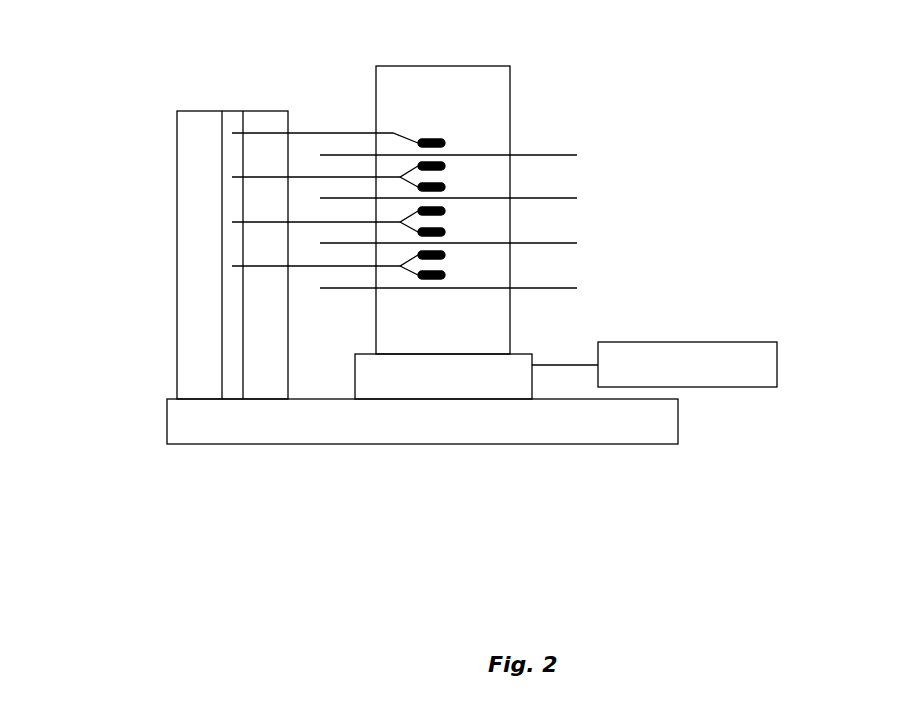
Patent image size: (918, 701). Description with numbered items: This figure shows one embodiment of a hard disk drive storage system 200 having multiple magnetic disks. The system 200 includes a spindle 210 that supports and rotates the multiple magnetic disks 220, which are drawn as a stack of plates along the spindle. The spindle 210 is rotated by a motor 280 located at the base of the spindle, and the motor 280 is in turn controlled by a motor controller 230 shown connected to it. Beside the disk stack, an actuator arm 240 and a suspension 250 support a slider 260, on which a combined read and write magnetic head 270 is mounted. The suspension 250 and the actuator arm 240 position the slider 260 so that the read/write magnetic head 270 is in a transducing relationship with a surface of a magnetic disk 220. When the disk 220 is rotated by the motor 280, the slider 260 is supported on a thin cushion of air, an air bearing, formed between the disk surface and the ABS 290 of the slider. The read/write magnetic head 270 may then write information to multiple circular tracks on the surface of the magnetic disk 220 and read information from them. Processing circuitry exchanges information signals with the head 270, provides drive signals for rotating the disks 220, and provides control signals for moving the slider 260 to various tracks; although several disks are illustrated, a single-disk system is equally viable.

The hard disk drive storage system 200 is at (66, 516).
The spindle 210 is at (510, 66).
The magnetic disks 220 is at (543, 155).
The motor controller 230 is at (713, 342).
The actuator arm 240 is at (332, 132).
The suspension 250 is at (410, 132).
The slider 260 is at (436, 141).
The read/write magnetic head 270 is at (443, 279).
The motor 280 is at (522, 354).
The ABS 290 is at (441, 142).